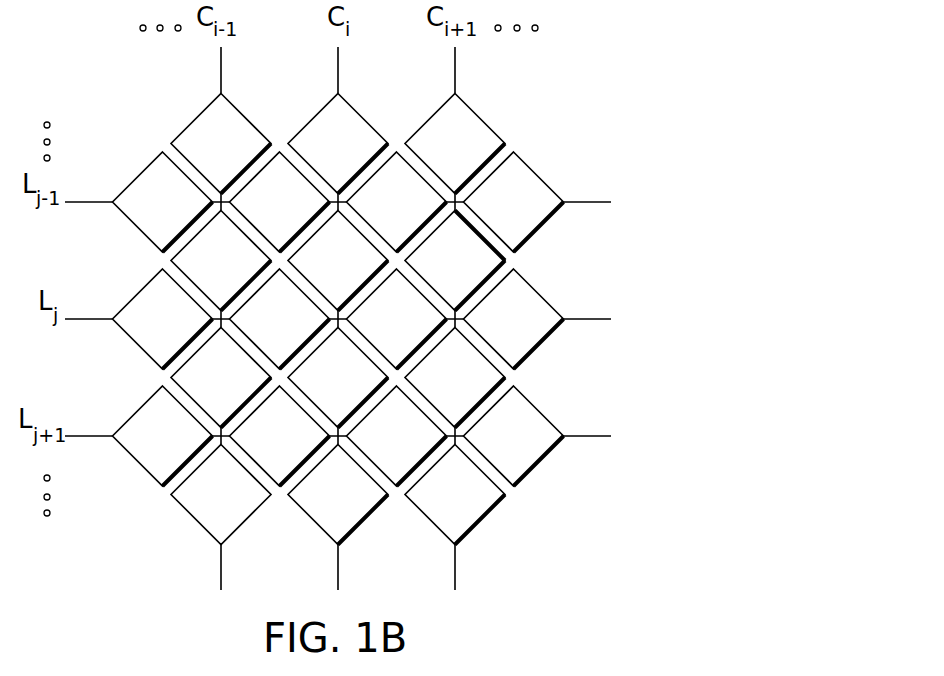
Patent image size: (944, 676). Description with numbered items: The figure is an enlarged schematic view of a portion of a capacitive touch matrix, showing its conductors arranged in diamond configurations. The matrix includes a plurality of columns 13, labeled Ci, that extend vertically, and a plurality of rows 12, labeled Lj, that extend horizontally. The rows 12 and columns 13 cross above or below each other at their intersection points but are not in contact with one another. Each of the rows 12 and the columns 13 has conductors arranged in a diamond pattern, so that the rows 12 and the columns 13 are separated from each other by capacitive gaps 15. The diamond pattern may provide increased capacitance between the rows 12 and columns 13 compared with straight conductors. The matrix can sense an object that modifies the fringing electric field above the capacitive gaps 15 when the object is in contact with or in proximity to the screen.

The rows 12 is at (137, 293).
The columns 13 is at (365, 116).
The capacitive gaps 15 is at (487, 231).